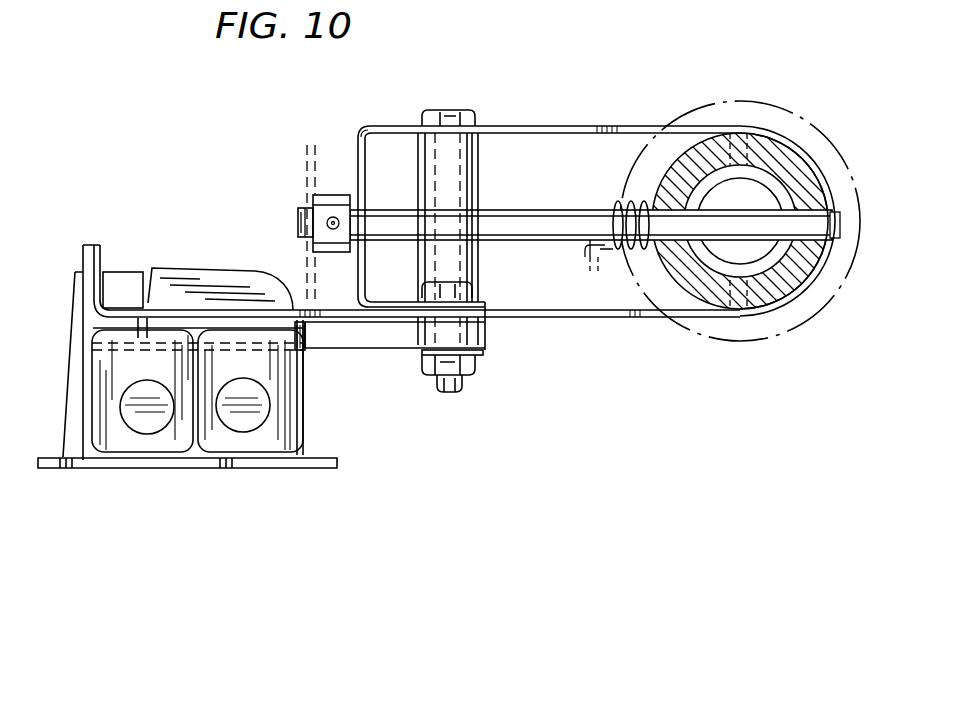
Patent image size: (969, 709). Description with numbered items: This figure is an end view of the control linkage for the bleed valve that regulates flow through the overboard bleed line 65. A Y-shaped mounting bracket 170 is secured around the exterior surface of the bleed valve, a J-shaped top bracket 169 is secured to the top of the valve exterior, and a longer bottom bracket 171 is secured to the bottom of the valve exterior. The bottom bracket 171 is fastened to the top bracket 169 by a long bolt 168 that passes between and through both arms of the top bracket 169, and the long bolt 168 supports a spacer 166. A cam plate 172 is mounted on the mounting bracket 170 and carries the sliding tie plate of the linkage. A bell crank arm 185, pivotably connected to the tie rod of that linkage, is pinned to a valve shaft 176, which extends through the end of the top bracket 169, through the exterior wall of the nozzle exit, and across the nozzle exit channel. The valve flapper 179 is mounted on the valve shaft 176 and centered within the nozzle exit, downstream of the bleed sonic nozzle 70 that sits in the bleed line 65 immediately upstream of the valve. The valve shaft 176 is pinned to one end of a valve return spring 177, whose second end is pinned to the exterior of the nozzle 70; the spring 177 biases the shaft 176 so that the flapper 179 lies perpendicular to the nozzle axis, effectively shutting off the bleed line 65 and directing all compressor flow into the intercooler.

The overboard bleed line 65 is at (858, 258).
The bleed sonic nozzle 70 is at (810, 275).
The valve flapper 179 is at (760, 180).
The valve shaft 176 is at (381, 208).
The bell crank arm 185 is at (315, 290).
The valve return spring 177 is at (622, 215).
The Y-shaped mounting bracket 170 is at (352, 114).
The J-shaped top bracket 169 is at (357, 148).
The bottom bracket 171 is at (597, 318).
The cam plate 172 is at (383, 348).
The spacer 166 is at (478, 172).
The long bolt 168 is at (462, 392).